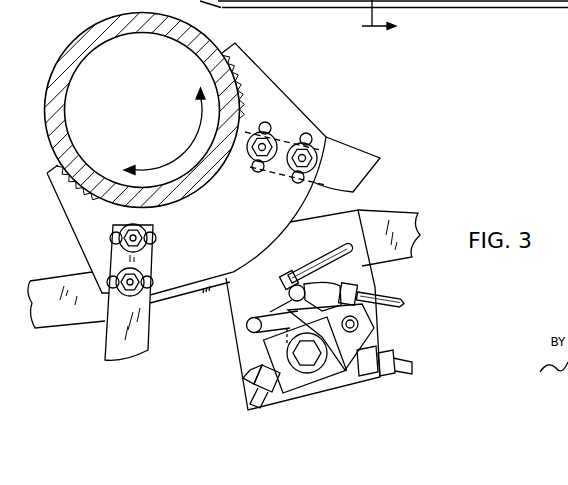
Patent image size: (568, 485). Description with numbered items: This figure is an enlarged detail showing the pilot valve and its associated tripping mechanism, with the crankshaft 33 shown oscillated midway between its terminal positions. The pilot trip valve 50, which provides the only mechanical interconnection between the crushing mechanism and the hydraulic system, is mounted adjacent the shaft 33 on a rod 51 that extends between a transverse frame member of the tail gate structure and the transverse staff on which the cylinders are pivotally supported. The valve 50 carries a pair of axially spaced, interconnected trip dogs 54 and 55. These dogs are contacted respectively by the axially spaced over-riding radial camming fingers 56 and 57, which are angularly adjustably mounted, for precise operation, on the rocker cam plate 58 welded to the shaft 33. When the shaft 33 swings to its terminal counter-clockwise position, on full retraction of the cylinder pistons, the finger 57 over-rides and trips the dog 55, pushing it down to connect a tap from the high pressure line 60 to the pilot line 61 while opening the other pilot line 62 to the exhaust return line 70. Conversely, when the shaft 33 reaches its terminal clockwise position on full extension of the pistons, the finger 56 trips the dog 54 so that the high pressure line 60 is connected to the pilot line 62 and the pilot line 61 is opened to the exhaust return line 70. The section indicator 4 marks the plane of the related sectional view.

The section line 4- 4 is at (366, 16).
The crankshaft 33 is at (84, 37).
The pilot trip valve 50 is at (376, 336).
The rod 51 is at (403, 260).
The trip dog 54 is at (245, 326).
The trip dog 55 is at (287, 275).
The radial camming finger 56 is at (350, 161).
The radial camming finger 57 is at (115, 342).
The rocker cam plate 58 is at (290, 114).
The high pressure line 60 is at (250, 387).
The pilot line 61 is at (347, 238).
The pilot line 62 is at (390, 297).
The exhaust return line 70 is at (405, 364).